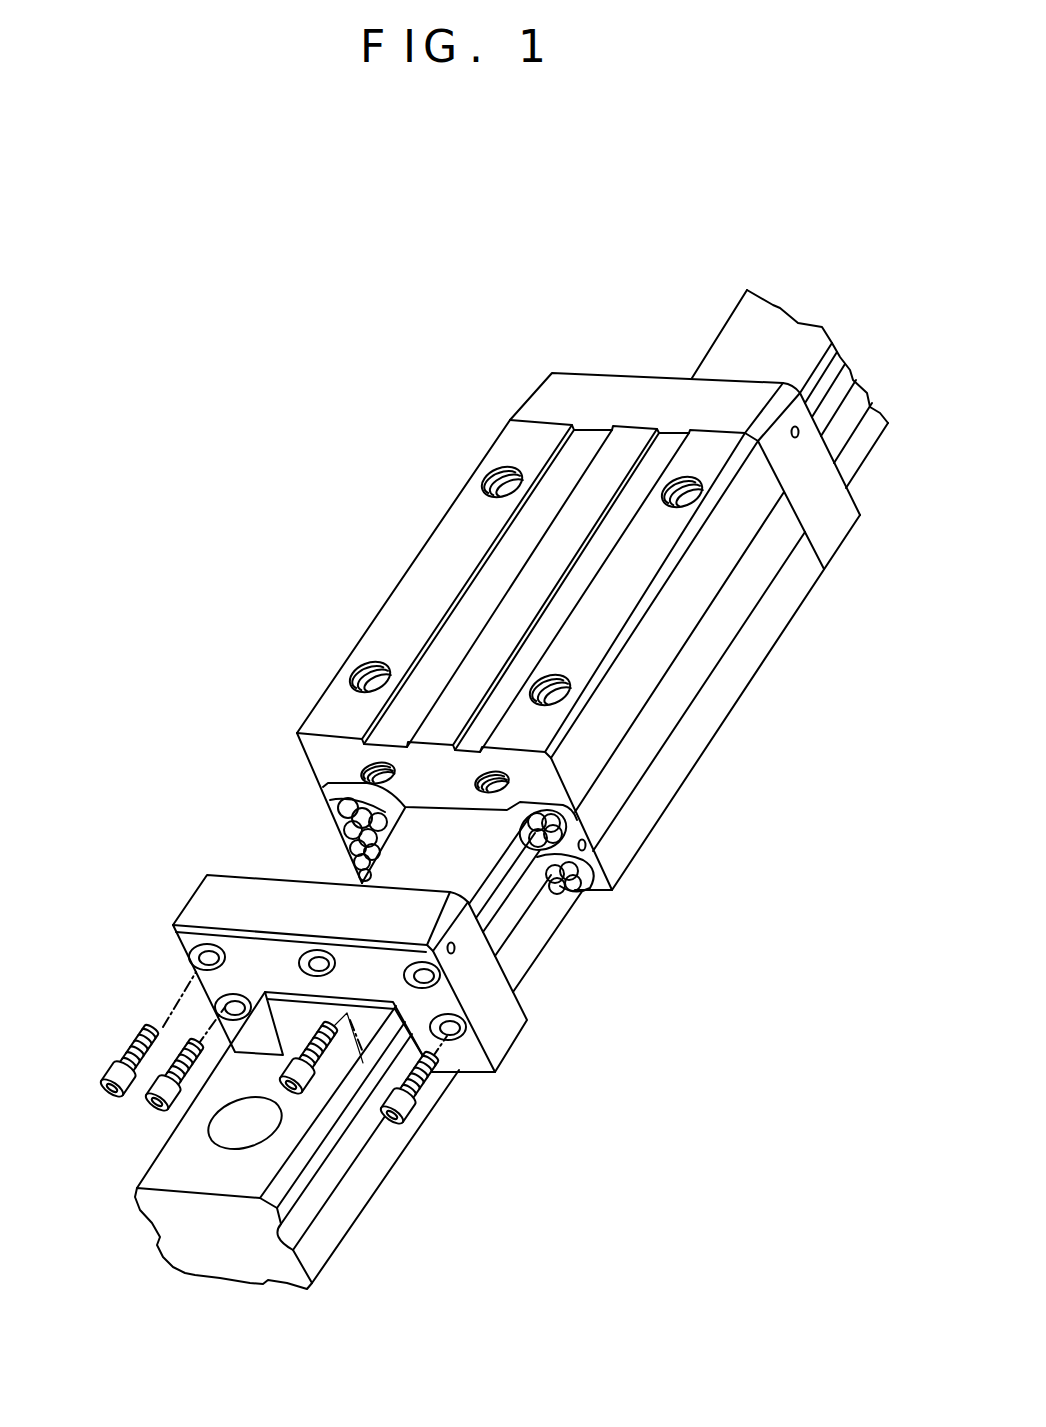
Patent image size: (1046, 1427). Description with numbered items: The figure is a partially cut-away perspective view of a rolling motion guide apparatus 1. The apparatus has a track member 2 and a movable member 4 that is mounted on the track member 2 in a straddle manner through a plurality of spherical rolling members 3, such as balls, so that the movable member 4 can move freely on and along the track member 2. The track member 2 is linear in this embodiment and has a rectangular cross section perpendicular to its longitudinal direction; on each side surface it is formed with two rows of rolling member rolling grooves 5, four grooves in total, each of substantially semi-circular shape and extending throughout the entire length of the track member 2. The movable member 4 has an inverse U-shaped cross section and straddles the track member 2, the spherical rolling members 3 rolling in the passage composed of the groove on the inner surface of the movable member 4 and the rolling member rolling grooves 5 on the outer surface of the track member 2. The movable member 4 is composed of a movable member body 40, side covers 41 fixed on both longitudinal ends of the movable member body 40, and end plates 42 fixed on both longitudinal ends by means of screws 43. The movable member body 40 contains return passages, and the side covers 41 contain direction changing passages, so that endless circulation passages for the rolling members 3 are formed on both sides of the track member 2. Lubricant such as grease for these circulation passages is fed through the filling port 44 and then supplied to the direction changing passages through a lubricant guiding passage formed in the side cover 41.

The rolling motion guide apparatus 1 is at (313, 273).
The track member 2 is at (242, 1247).
The spherical rolling members 3 is at (355, 800).
The movable member 4 is at (425, 582).
The rolling member rolling grooves 5 is at (138, 1214).
The movable member body 40 is at (757, 652).
The side covers 41 is at (826, 540).
The end plates 42 is at (832, 452).
The screws 43 is at (108, 1078).
The filling port 44 is at (306, 957).